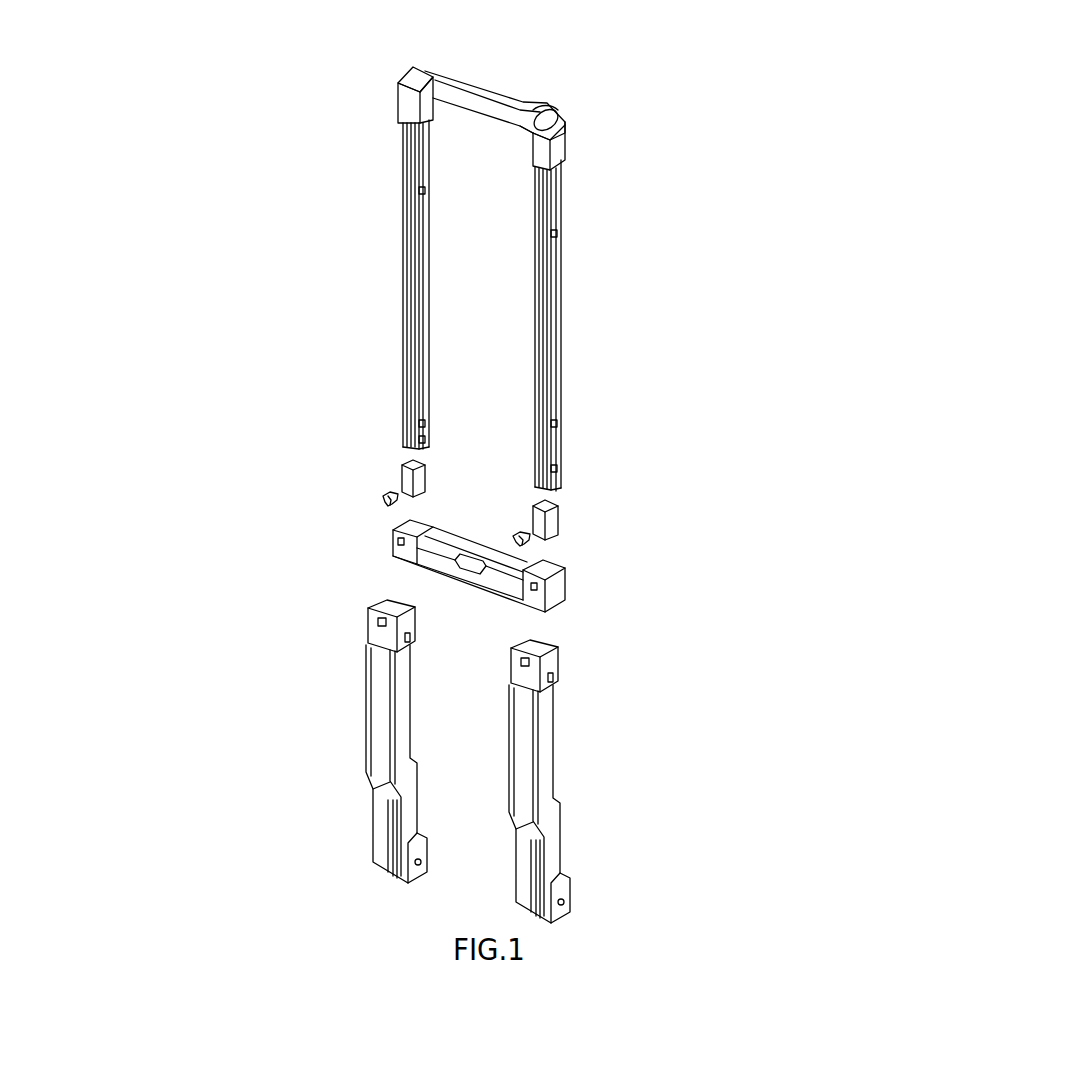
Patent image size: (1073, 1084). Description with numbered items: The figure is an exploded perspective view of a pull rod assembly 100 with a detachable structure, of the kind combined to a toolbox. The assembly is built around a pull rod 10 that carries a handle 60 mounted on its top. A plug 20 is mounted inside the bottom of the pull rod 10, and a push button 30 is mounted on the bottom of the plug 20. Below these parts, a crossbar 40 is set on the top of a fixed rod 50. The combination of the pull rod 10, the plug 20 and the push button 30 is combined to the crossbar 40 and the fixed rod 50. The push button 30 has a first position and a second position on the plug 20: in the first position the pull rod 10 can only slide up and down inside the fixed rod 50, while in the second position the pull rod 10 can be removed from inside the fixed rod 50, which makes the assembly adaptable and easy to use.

The pull rod assembly 100 is at (912, 922).
The pull rod 10 is at (560, 290).
The handle 60 is at (480, 93).
The plug 20 is at (557, 521).
The push button 30 is at (385, 494).
The crossbar 40 is at (563, 580).
The fixed rod 50 is at (522, 750).